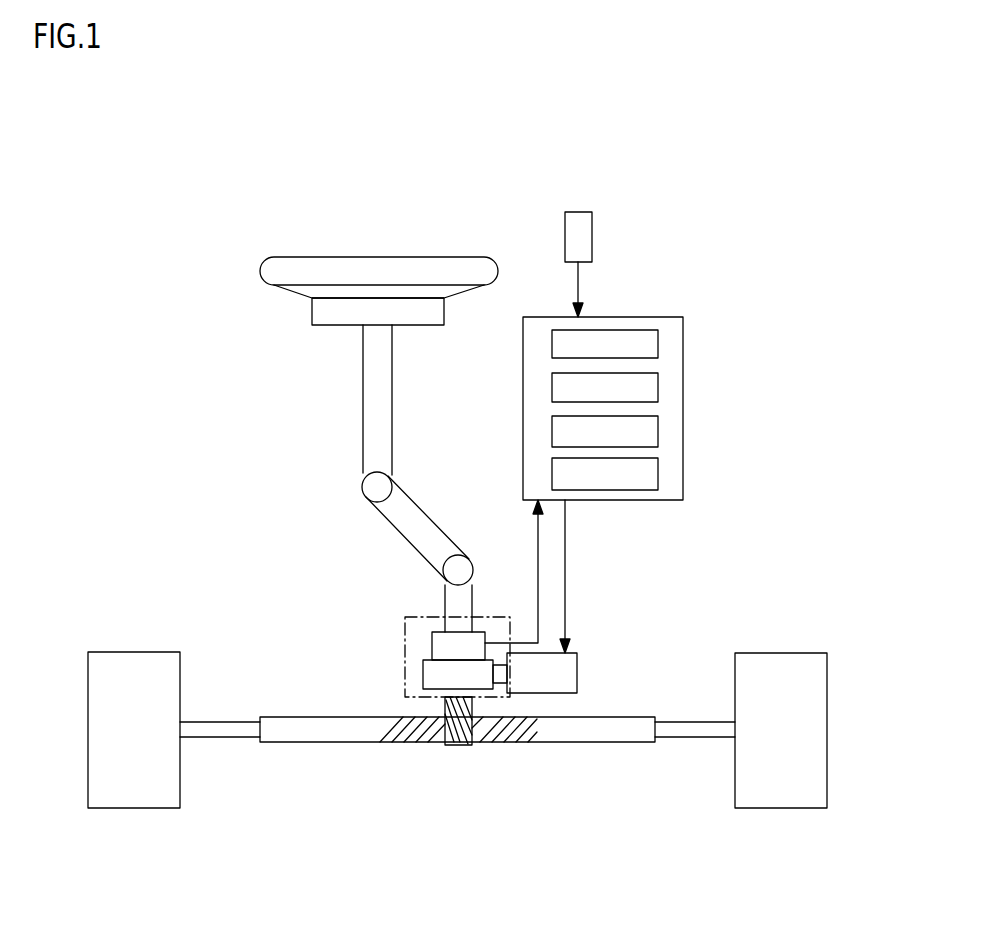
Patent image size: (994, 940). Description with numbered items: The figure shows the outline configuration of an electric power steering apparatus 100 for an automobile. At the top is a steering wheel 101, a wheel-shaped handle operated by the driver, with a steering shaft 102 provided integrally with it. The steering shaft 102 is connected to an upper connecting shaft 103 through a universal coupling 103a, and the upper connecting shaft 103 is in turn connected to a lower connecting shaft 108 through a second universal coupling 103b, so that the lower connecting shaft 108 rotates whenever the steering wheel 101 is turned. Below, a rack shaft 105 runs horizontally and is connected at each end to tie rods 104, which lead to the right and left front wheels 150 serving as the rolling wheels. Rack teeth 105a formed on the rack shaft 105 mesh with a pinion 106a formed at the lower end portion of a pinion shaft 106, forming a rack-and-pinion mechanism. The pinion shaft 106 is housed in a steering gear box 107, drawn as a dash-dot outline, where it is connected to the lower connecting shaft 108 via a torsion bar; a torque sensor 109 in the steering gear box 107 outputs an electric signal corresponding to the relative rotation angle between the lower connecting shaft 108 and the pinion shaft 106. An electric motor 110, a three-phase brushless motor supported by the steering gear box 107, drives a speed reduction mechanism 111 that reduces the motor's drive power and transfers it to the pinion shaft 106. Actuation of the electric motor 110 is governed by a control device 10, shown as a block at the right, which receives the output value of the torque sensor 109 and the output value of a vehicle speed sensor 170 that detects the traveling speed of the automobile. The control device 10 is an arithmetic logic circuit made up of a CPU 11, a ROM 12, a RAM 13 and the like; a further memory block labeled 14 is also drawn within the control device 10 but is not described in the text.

The electric power steering apparatus 100 is at (145, 330).
The steering wheel 101 is at (312, 257).
The steering shaft 102 is at (363, 370).
The upper connecting shaft 103 is at (428, 523).
The universal coupling 103a is at (362, 487).
The universal coupling 103b is at (444, 572).
The tie rods 104 is at (218, 722).
The rack shaft 105 is at (620, 743).
The rack teeth 105a is at (525, 745).
The pinion shaft 106 is at (445, 705).
The pinion 106a is at (461, 745).
The steering gear box 107 is at (405, 620).
The lower connecting shaft 108 is at (445, 598).
The torque sensor 109 is at (482, 617).
The electric motor 110 is at (577, 665).
The speed reduction mechanism 111 is at (423, 670).
The front wheels 150 is at (130, 652).
The vehicle speed sensor 170 is at (579, 212).
The control device 10 is at (630, 317).
The CPU 11 is at (658, 343).
The ROM 12 is at (658, 385).
The RAM 13 is at (658, 428).
The EEPROM 14 is at (658, 470).